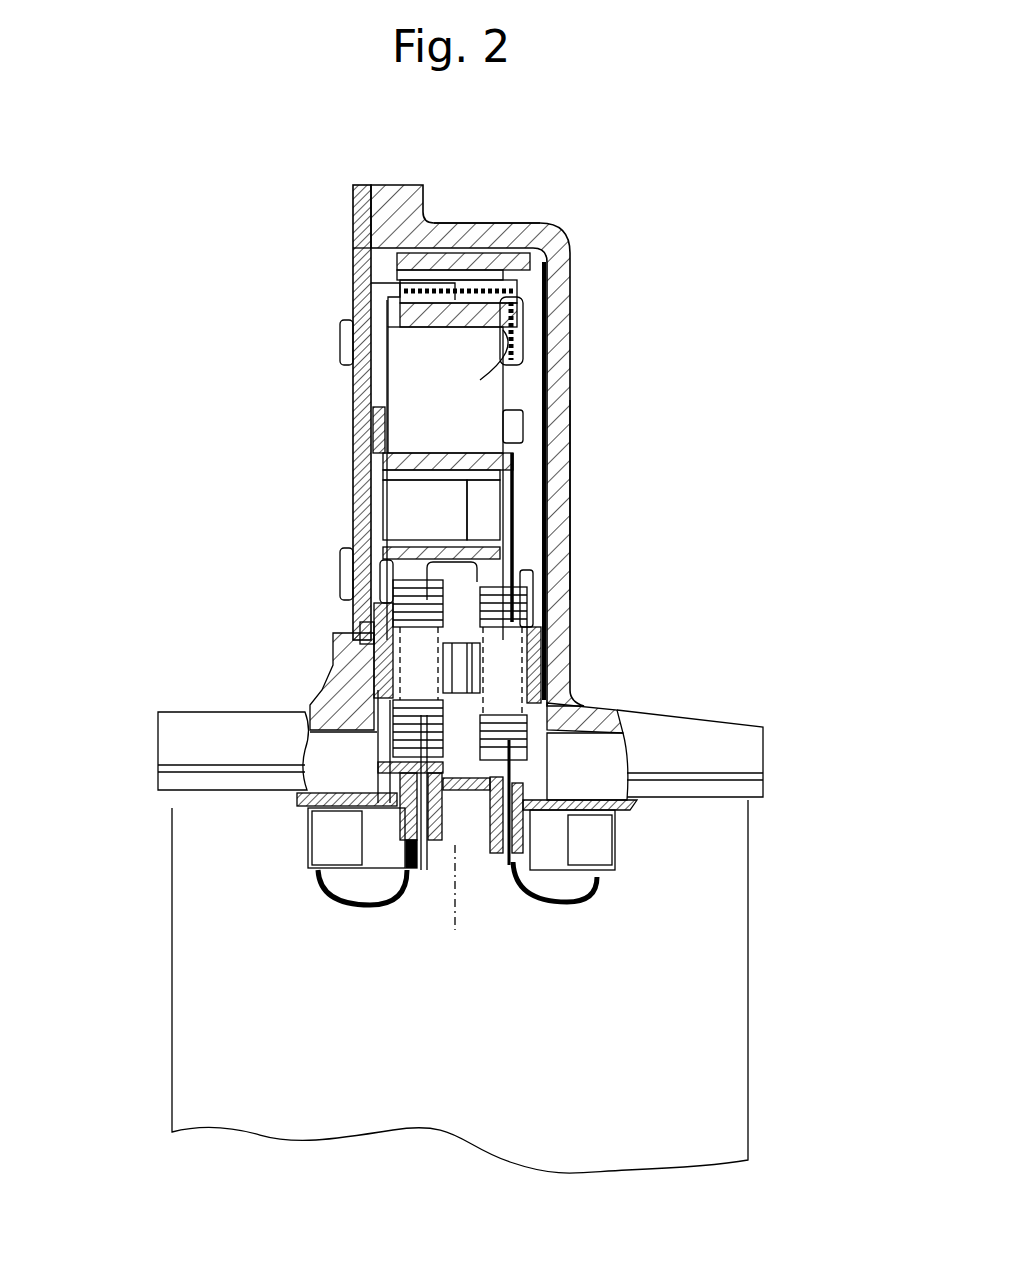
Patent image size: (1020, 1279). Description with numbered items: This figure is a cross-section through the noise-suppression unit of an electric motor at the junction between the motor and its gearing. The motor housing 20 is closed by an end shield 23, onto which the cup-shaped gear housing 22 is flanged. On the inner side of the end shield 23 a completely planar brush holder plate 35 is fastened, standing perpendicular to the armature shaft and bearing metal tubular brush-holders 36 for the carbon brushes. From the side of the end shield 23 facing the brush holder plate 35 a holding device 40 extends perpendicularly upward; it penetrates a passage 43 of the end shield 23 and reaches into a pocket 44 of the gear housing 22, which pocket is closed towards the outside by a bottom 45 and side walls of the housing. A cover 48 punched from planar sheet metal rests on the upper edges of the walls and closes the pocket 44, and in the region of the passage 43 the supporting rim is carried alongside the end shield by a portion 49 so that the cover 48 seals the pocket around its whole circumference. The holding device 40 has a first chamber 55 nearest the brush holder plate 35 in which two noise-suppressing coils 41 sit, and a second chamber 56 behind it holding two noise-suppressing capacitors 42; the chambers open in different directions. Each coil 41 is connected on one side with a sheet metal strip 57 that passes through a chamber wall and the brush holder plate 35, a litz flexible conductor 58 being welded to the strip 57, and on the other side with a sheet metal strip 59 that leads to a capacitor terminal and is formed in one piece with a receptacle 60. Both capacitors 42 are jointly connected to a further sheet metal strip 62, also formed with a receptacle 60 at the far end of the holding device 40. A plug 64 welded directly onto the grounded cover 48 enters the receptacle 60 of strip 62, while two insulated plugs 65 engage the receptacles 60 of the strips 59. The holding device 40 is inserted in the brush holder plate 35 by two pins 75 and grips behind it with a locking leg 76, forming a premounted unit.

The motor housing 20 is at (200, 1062).
The gear housing 22 is at (553, 238).
The end shield 23 is at (752, 745).
The brush holder plate 35 is at (350, 808).
The tubular brush-holder 36 is at (382, 845).
The holding device 40 is at (493, 262).
The noise-suppressing coil 41 is at (360, 688).
The noise-suppressing capacitor 42 is at (435, 340).
The passage 43 is at (365, 637).
The pocket 44 is at (377, 378).
The bottom 45 is at (560, 568).
The cover 48 is at (355, 248).
The portion 49 is at (370, 610).
The first chamber 55 is at (463, 617).
The second chamber 56 is at (470, 332).
The sheet metal strip 57 is at (420, 880).
The litz flexible conductor 58 is at (335, 925).
The sheet metal strip 59 is at (565, 520).
The receptacle 60 is at (430, 277).
The sheet metal strip 62 is at (517, 306).
The plug 64 is at (372, 283).
The plug 65 is at (420, 512).
The pin 75 is at (465, 845).
The locking leg 76 is at (385, 778).